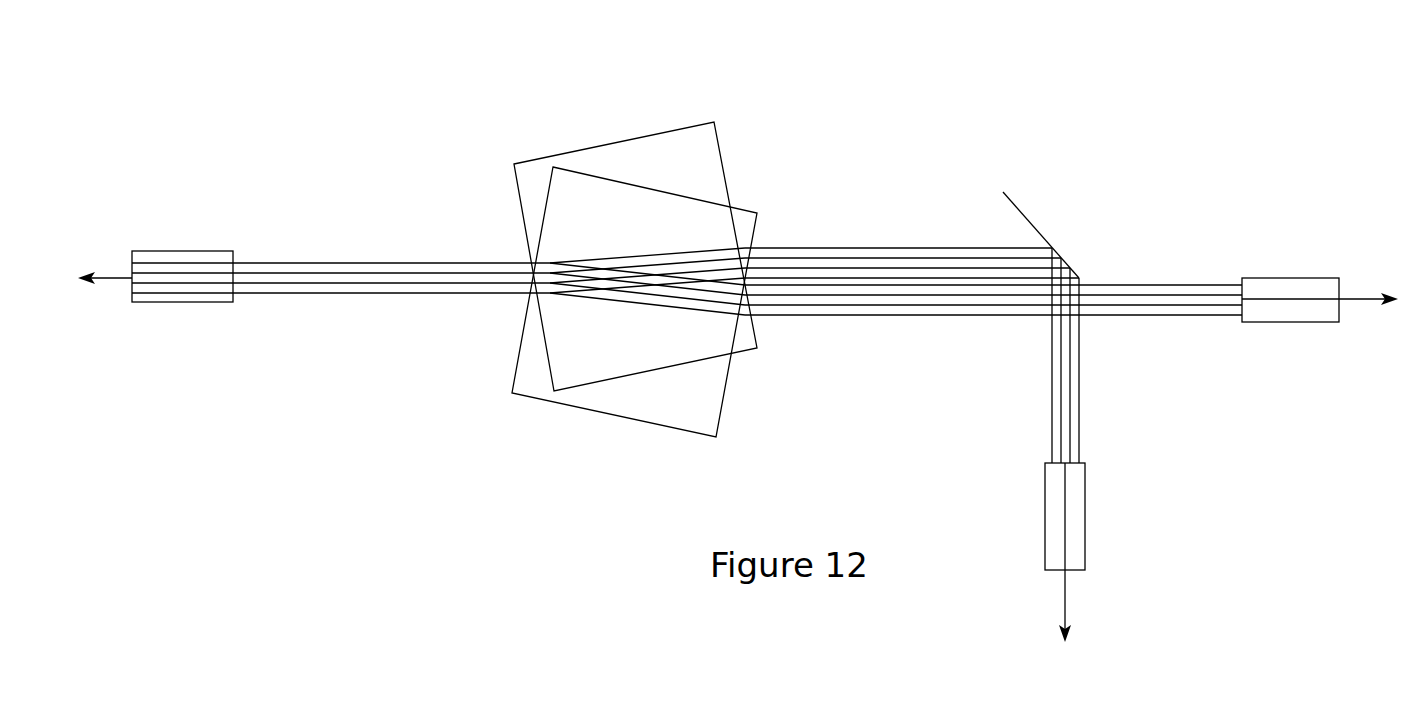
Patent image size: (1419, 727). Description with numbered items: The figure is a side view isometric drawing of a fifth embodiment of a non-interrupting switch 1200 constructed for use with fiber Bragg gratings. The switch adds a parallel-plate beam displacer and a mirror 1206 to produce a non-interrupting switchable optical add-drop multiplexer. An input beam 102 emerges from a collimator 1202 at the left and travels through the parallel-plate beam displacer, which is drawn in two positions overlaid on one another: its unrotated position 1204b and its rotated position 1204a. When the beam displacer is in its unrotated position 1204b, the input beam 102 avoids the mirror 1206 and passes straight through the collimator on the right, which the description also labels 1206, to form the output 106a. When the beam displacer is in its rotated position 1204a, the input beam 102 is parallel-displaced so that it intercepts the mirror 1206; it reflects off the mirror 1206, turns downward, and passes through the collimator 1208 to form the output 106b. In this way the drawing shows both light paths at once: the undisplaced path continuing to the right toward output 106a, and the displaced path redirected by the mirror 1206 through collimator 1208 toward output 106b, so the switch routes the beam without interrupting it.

The non-interrupting switch 1200 is at (536, 60).
The input beam 102 is at (113, 277).
The collimator 1202 is at (177, 303).
The rotated position of parallel-plate beam displacer 1204a is at (618, 143).
The unrotated position of parallel-plate beam displacer 1204b is at (745, 209).
The mirror 1206 is at (1024, 215).
The output 106a is at (1362, 302).
The output 106b is at (1065, 595).
The collimator 1208 is at (1085, 518).